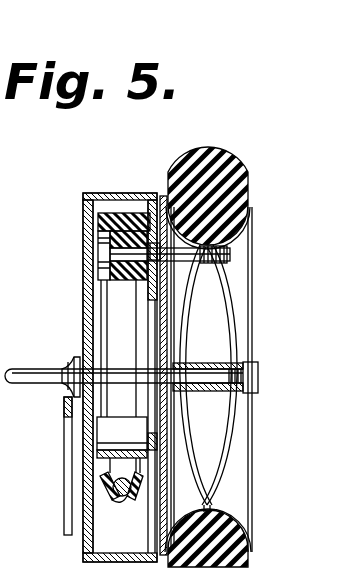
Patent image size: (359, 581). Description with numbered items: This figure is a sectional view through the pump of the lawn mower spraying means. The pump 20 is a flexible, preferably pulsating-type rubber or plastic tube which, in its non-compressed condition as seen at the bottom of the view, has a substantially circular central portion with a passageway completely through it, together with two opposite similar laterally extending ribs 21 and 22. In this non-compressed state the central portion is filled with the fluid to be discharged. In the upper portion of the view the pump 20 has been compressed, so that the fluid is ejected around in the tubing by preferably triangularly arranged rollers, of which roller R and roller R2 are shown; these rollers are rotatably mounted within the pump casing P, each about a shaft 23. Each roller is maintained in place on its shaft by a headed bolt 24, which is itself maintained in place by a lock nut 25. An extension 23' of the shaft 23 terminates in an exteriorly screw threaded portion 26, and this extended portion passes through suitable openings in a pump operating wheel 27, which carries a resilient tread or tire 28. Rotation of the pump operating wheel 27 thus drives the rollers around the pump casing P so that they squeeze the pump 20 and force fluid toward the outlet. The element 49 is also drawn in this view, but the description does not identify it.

The pump 20 is at (128, 200).
The pump casing P is at (97, 193).
The laterally extending rib 21 is at (102, 488).
The laterally extending rib 22 is at (151, 494).
The shaft 23 is at (93, 220).
The extension of the shaft 23' is at (99, 376).
The headed bolt 24 is at (100, 242).
The lock nut 25 is at (158, 200).
The exteriorly screw threaded portion 26 is at (222, 292).
The pump operating wheel 27 is at (229, 151).
The resilient tread or tire 28 is at (175, 150).
The handle knob 49 is at (63, 405).
The roller R is at (118, 434).
The roller R2 is at (100, 295).